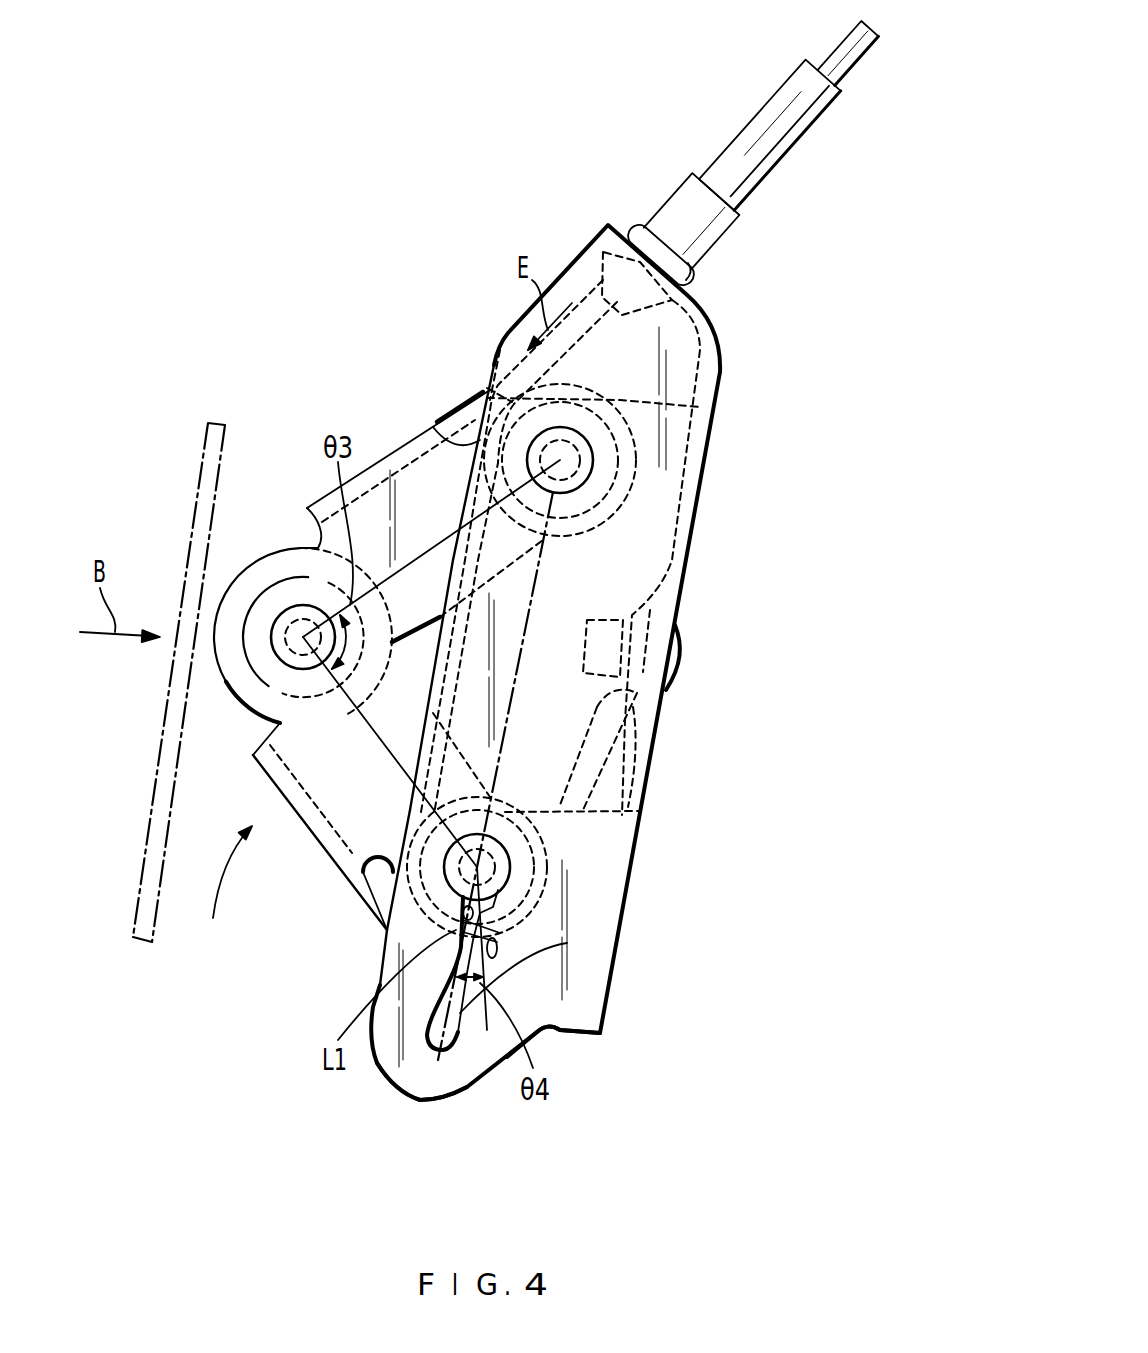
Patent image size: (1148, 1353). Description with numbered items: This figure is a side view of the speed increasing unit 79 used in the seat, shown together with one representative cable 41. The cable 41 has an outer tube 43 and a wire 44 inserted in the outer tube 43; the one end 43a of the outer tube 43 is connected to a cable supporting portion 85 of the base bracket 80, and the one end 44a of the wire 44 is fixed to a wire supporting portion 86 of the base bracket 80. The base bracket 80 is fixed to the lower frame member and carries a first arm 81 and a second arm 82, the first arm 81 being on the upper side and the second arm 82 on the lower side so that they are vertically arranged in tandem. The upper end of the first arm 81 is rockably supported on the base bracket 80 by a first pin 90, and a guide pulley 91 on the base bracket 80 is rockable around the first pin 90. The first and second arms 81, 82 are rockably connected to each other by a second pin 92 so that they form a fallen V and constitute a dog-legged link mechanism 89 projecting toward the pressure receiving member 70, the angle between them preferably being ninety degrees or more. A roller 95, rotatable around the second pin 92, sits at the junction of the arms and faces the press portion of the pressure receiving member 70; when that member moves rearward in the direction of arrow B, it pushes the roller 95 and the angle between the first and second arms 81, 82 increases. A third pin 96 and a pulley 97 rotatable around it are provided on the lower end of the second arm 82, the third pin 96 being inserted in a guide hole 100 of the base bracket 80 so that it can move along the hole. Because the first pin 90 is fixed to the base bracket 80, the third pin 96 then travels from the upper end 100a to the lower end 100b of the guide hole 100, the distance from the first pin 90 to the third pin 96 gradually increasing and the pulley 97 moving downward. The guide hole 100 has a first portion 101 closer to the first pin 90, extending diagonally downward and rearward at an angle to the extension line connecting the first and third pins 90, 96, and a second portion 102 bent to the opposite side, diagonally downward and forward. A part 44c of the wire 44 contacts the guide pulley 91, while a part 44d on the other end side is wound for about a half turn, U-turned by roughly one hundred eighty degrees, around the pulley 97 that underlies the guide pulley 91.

The cable 41 is at (737, 125).
The outer tube 43 is at (775, 150).
The one end of the outer tube 43a is at (692, 284).
The wire 44 is at (850, 60).
The one end of the wire 44a is at (667, 710).
The part of the wire 44c is at (505, 345).
The part of the wire on the other end side 44d is at (390, 940).
The pressure receiving member 70 is at (165, 738).
The speed increasing unit 79 is at (444, 245).
The base bracket 80 is at (697, 523).
The first arm 81 is at (412, 480).
The second arm 82 is at (342, 820).
The cable supporting portion 85 is at (634, 232).
The wire supporting portion 86 is at (680, 665).
The link mechanism 89 is at (212, 881).
The first pin 90 is at (593, 463).
The guide pulley 91 is at (700, 407).
The second pin 92 is at (297, 630).
The roller 95 is at (240, 694).
The third pin 96 is at (510, 862).
The pulley 97 is at (510, 890).
The guide hole 100 is at (566, 1028).
The one end of the guide hole 100a is at (640, 811).
The other end of the guide hole 100b is at (433, 1042).
The first portion of the guide hole 101 is at (495, 918).
The second portion of the guide hole 102 is at (458, 1022).